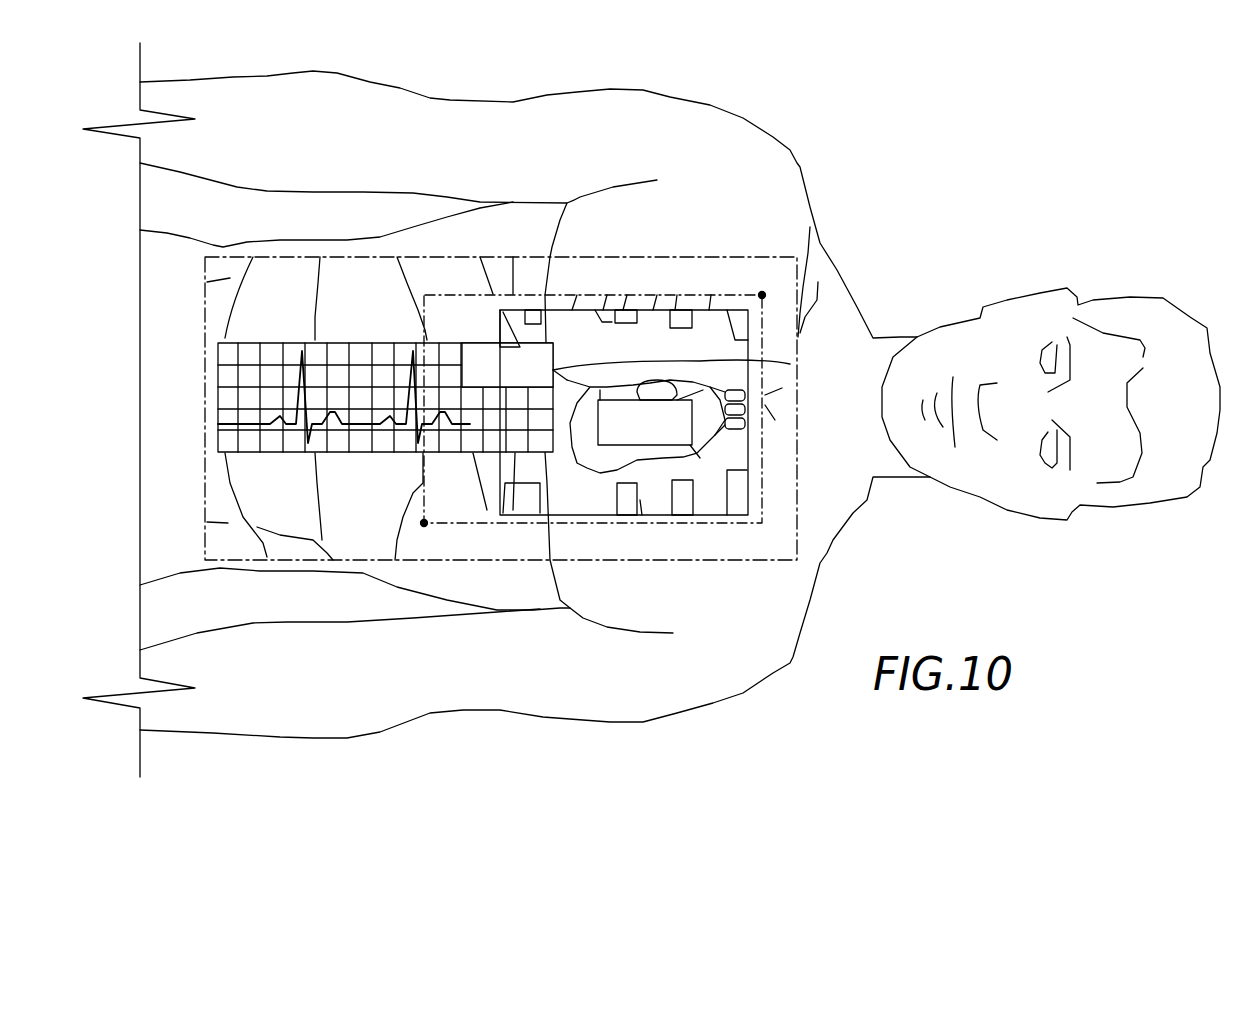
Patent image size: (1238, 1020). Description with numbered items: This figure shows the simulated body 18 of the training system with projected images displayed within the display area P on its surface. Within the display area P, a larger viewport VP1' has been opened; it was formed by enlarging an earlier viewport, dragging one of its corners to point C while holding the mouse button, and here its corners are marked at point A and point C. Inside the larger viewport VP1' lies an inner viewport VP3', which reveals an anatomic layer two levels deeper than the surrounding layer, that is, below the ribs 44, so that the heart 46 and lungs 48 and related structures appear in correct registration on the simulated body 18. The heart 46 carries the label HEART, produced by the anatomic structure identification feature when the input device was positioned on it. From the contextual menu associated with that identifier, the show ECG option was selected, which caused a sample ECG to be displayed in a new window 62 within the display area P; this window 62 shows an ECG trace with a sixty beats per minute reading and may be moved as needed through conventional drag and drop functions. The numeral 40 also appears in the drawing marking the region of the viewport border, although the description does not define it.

The simulated body 18 is at (797, 167).
The display area P is at (707, 257).
The window 62 is at (337, 343).
The wearable device 40 is at (670, 295).
The ribs 44 is at (618, 312).
The heart 46 is at (790, 364).
The lungs 48 is at (660, 390).
The reference point A is at (601, 393).
The point C is at (414, 536).
The larger viewport VP1' is at (857, 256).
The inner viewport VP3' is at (739, 578).